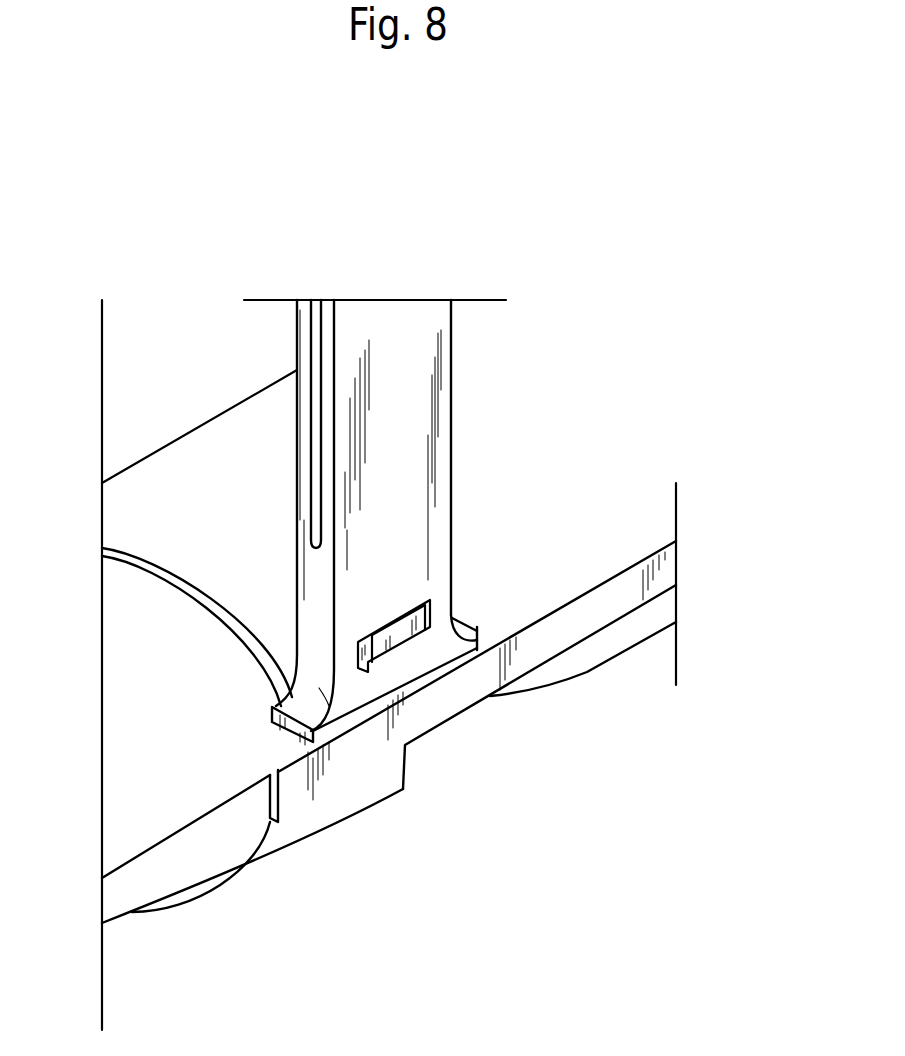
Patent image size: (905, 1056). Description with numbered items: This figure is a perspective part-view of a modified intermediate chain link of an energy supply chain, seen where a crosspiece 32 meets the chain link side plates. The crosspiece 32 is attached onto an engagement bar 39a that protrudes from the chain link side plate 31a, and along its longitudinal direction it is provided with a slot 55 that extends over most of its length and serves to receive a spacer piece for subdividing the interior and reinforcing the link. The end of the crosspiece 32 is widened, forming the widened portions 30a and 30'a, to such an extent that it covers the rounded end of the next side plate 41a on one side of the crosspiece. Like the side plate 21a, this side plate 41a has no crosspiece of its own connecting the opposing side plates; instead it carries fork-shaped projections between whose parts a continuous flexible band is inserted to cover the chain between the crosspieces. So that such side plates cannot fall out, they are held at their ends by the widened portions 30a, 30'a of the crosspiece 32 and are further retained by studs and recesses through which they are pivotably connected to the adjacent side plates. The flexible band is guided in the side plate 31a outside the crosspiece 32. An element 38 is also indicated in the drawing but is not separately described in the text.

The slot 55 is at (315, 357).
The crosspiece 32 is at (389, 355).
The widened portion 30'a is at (550, 496).
The widened portion 30a is at (276, 706).
The side plate 21a is at (572, 663).
The engagement bar 39a is at (395, 645).
The opening 38 is at (368, 668).
The chain link side plate 31a is at (340, 785).
The side plate 41a is at (192, 847).